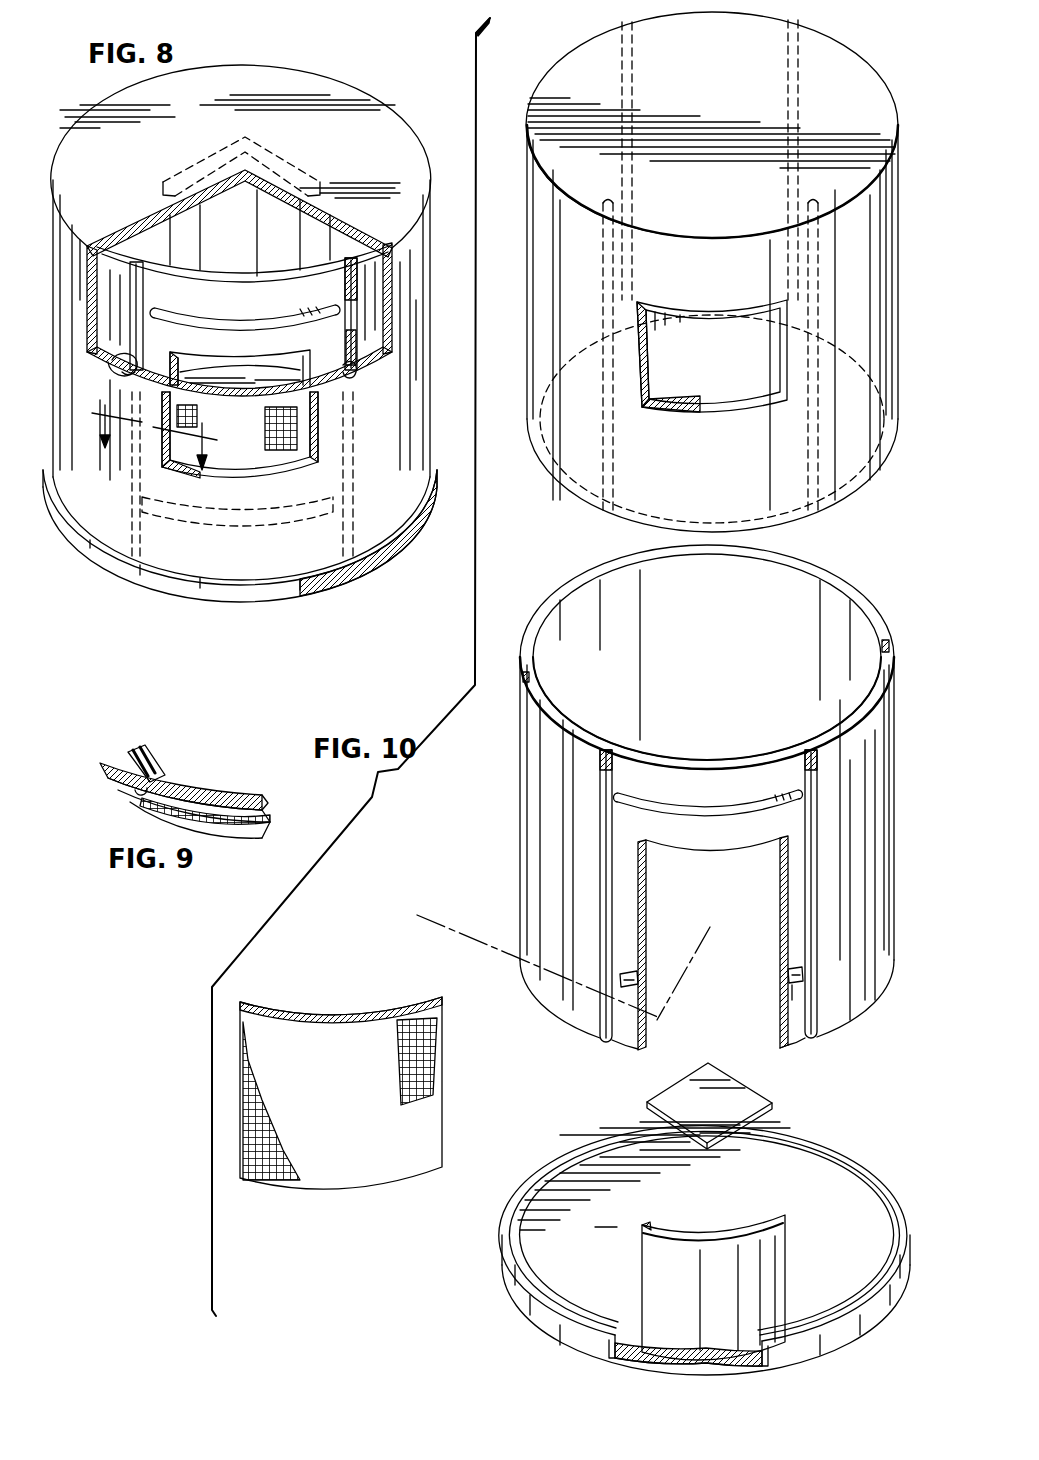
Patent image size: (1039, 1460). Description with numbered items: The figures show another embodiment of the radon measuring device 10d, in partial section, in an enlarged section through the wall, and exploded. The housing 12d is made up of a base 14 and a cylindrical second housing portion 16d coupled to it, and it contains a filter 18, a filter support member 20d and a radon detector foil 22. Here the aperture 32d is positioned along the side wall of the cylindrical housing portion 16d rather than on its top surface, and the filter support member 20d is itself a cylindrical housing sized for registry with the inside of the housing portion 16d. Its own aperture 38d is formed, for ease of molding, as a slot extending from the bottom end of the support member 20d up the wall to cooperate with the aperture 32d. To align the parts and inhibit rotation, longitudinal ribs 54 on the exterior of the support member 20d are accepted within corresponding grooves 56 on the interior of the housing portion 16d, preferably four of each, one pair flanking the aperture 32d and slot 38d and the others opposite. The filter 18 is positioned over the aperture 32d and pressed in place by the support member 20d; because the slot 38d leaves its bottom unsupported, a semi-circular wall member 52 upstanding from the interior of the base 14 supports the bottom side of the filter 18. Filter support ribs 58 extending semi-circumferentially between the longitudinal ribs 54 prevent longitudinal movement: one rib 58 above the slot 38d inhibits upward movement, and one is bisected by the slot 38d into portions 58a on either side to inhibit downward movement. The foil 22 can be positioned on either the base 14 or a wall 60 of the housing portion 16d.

In FIG. 8, the radon measuring device 10d is at (353, 78).
In FIG. 10, the radon measuring device 10d is at (856, 34).
In FIG. 10, the housing 12d is at (902, 278).
In FIG. 8, the base 14 is at (370, 565).
In FIG. 10, the base 14 is at (827, 505).
In FIG. 8, the second housing portion 16d is at (392, 122).
In FIG. 10, the second housing portion 16d is at (885, 185).
In FIG. 10, the filter 18 is at (420, 1102).
In FIG. 10, the filter support member 20d is at (862, 601).
In FIG. 10, the foil 22 is at (673, 1097).
In FIG. 8, the aperture 32d is at (313, 438).
In FIG. 10, the aperture 32d is at (703, 310).
In FIG. 10, the aperture 38d is at (792, 985).
In FIG. 10, the semi-circular wall member 52 is at (760, 1250).
In FIG. 8, the longitudinal rib 54 is at (137, 315).
In FIG. 9, the longitudinal rib 54 is at (152, 778).
In FIG. 10, the longitudinal rib 54 is at (603, 562).
In FIG. 8, the groove 56 is at (353, 380).
In FIG. 9, the groove 56 is at (135, 790).
In FIG. 10, the groove 56 is at (622, 60).
In FIG. 10, the filter support rib 58 is at (657, 808).
In FIG. 10, the rib portion 58a is at (625, 973).
In FIG. 8, the wall 60 is at (258, 73).